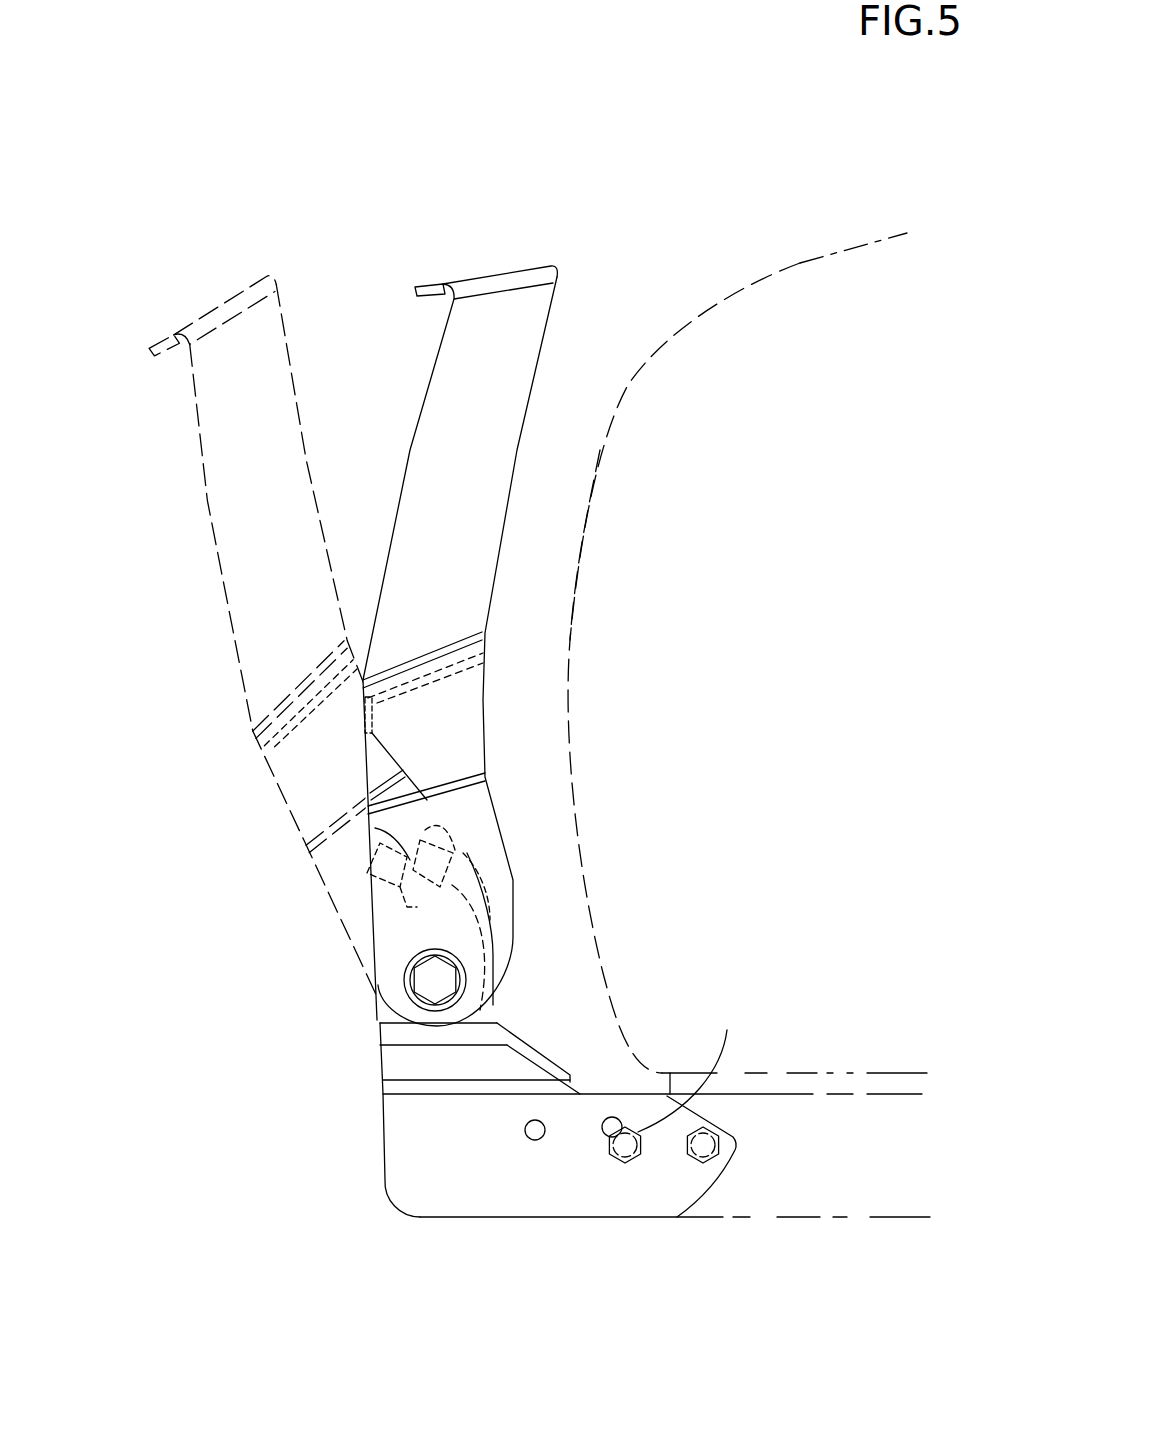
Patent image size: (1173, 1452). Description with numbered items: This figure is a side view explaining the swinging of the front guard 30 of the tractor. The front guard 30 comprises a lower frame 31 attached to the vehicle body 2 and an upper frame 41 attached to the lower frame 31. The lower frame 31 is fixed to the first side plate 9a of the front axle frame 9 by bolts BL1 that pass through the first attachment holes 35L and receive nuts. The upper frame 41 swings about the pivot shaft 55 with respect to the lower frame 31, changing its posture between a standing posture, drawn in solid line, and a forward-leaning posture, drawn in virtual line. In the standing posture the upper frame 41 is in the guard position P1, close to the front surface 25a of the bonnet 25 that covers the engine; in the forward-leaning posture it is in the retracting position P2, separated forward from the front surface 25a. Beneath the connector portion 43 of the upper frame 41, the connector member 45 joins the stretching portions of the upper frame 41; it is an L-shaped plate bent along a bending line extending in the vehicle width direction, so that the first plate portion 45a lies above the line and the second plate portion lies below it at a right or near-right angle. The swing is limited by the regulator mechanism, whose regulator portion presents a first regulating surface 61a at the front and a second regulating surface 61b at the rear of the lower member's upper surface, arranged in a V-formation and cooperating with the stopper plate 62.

The vehicle body 2 is at (802, 255).
The front axle frame 9 is at (858, 1230).
The first side plate 9a is at (783, 1220).
The bonnet 25 is at (690, 300).
The front surface of the bonnet 25a is at (612, 412).
The front guard 30 is at (372, 610).
The lower frame 31 is at (393, 1213).
The first attachment holes 35L is at (713, 1170).
The upper frame 41 is at (372, 610).
The connector portion 43 is at (479, 277).
The connector member 45 is at (437, 656).
The first plate portion 45a is at (483, 663).
The pivot shaft 55 is at (432, 978).
The first regulating surface 61a is at (368, 870).
The second regulating surface 61b is at (425, 842).
The stopper plate 62 is at (425, 825).
The bolt BL1 is at (733, 1125).
The guard position P1 is at (525, 255).
The retracting position P2 is at (328, 614).